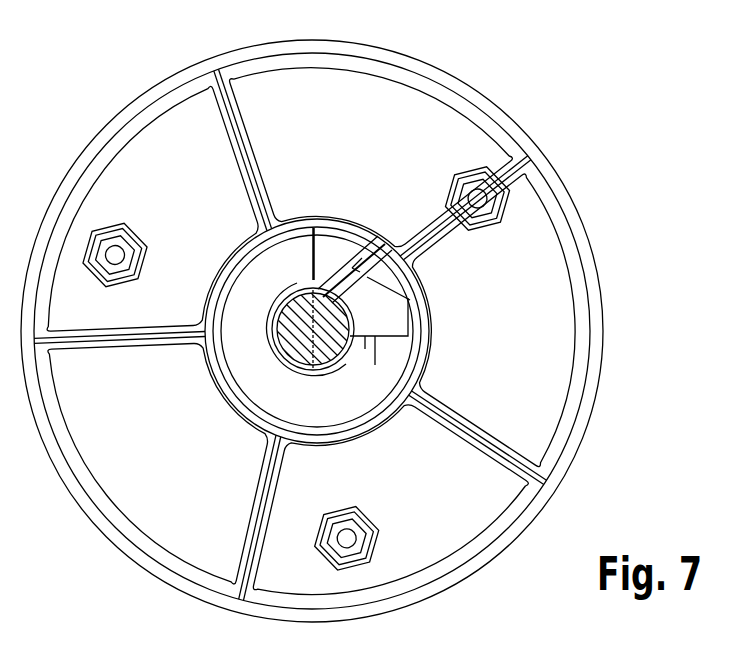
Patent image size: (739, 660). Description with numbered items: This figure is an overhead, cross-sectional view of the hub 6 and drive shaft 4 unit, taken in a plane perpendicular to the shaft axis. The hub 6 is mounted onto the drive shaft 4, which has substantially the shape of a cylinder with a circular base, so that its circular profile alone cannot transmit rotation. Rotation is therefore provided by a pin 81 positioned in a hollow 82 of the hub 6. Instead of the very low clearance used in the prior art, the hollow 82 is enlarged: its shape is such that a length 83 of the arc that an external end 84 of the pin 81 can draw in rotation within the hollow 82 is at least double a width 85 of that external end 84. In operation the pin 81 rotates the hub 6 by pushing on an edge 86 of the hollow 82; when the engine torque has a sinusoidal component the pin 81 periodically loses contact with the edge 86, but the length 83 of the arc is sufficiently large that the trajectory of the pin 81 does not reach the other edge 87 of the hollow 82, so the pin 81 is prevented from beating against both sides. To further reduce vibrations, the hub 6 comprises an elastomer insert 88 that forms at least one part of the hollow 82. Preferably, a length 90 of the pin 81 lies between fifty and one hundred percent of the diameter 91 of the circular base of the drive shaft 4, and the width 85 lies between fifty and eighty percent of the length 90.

The hub 6 is at (510, 116).
The length of pin 90 is at (257, 230).
The drive shaft 4 is at (270, 348).
The pin 81 is at (312, 291).
The diameter of the circular base of the drive shaft 91 is at (292, 304).
The other edge of hollow 87 is at (326, 282).
The elastomer insert 88 is at (340, 262).
The length of arc 83 is at (378, 255).
The external end of pin 84 is at (395, 272).
The width of external end of pin 85 is at (405, 318).
The hollow 82 is at (378, 340).
The edge of hollow 86 is at (366, 345).